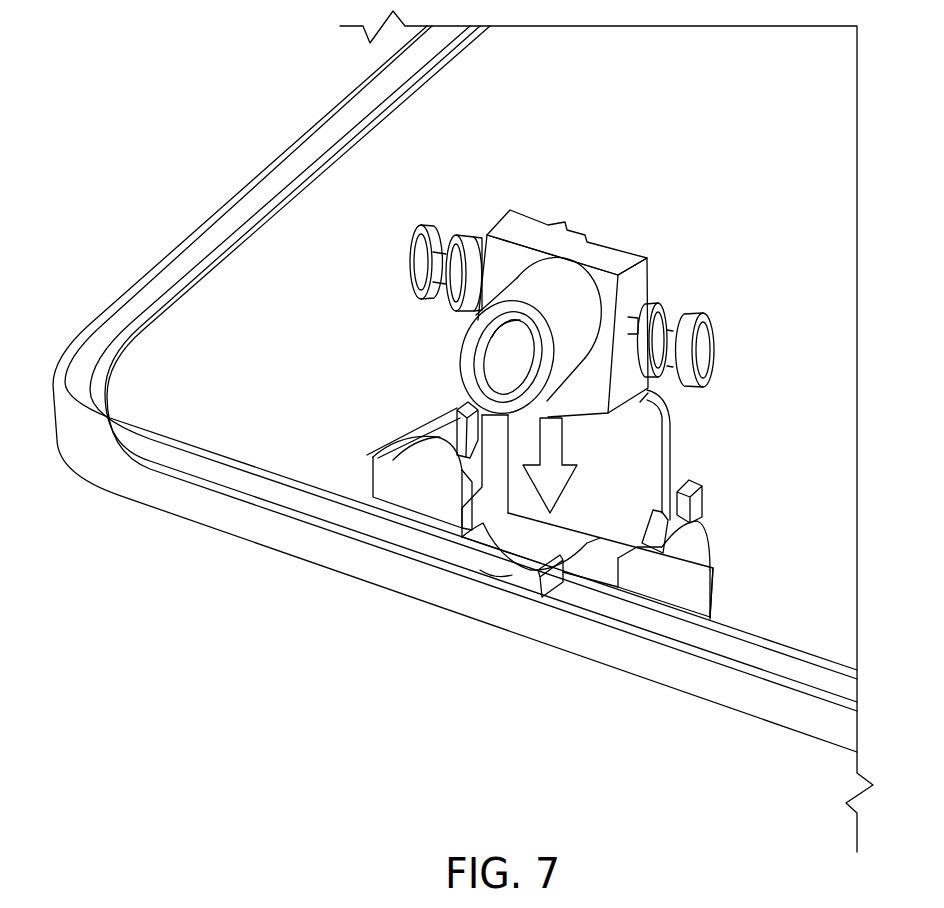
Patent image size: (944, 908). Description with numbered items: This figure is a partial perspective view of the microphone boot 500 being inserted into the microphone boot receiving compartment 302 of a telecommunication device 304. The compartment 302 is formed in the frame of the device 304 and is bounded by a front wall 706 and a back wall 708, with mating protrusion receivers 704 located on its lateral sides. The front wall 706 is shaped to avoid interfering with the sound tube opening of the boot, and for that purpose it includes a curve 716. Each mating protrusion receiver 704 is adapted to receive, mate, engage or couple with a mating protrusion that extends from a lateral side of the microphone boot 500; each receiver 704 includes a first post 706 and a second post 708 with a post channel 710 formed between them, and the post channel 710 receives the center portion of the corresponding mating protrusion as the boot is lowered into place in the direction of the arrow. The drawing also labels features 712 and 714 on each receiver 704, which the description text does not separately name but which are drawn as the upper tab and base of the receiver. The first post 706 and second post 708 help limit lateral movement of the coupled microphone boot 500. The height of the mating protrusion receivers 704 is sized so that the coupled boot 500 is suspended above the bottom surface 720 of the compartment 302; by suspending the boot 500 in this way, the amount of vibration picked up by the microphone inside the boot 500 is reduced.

The microphone boot receiving compartment 302 is at (587, 565).
The telecommunication device 304 is at (263, 263).
The microphone boot 500 is at (611, 247).
The mating protrusion receiver 704 is at (554, 558).
The front wall 706 is at (483, 525).
The back wall 708 is at (650, 428).
The post channel 710 is at (437, 440).
The prong 712 is at (472, 405).
The clip base 714 is at (533, 595).
The curve 716 is at (497, 566).
The bottom surface 720 is at (540, 582).